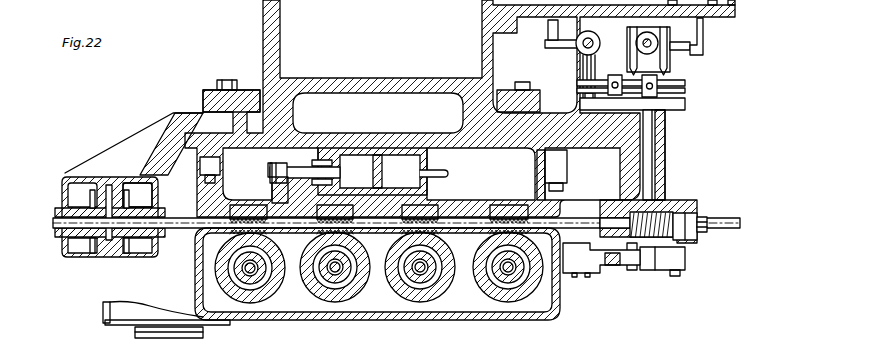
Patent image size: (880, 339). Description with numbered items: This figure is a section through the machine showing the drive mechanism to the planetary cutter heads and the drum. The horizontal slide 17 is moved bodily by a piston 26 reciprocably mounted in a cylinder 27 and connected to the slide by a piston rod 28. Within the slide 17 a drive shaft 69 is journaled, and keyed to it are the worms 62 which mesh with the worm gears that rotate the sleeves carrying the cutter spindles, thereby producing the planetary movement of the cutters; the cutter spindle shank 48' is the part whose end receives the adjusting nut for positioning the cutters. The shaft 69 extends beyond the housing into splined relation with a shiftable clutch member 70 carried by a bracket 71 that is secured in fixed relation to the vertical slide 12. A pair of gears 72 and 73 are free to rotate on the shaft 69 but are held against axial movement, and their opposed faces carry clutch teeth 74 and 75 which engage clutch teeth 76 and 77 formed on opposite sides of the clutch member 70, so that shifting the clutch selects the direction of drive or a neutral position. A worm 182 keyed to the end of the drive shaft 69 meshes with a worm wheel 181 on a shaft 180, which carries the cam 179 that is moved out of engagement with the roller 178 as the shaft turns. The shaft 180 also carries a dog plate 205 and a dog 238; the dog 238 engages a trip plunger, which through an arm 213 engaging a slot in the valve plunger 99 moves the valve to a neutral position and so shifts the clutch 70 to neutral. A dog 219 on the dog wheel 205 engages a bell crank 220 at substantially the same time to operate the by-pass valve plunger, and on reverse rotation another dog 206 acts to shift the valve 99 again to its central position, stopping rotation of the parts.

The vertical slide 12 is at (203, 110).
The bracket 71 is at (118, 144).
The gear 72 is at (62, 194).
The gear 73 is at (158, 194).
The clutch teeth 76 is at (97, 190).
The shiftable clutch member 70 is at (110, 185).
The clutch teeth 77 is at (128, 190).
The clutch teeth 74 is at (95, 253).
The clutch teeth 75 is at (126, 253).
The drive shaft 69 is at (182, 228).
The piston rod 28 is at (290, 165).
The piston 26 is at (378, 155).
The cylinder 27 is at (432, 175).
The worm 62 is at (248, 206).
The horizontal slide 17 is at (397, 319).
The spindle shank 48' is at (178, 321).
The bell crank 220 is at (558, 49).
The dog 238 is at (606, 50).
The dog 219 is at (590, 97).
The dog plate 205 is at (687, 100).
The dog 206 is at (660, 80).
The arm 213 is at (690, 55).
The valve plunger 99 is at (704, 28).
The shaft 180 is at (665, 152).
The worm wheel 181 is at (684, 205).
The worm 182 is at (670, 202).
The cam 179 is at (683, 260).
The roller 178 is at (612, 267).